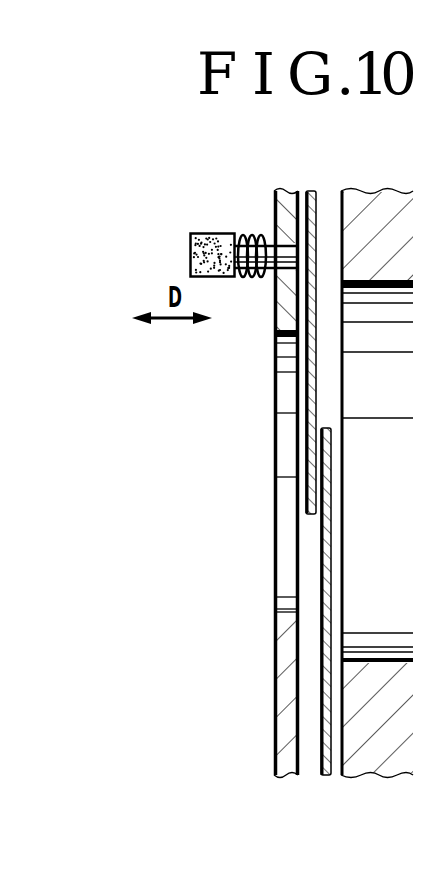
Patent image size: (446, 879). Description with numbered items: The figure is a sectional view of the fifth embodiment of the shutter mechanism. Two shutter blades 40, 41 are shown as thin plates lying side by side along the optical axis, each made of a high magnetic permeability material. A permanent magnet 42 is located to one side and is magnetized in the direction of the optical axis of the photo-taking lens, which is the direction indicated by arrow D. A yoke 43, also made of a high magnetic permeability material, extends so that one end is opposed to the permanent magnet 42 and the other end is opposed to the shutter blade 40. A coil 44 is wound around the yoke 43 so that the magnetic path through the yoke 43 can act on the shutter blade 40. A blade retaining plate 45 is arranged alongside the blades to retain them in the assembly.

The shutter blade 40 is at (315, 210).
The shutter blade 41 is at (321, 773).
The permanent magnet 42 is at (192, 247).
The yoke 43 is at (275, 215).
The coil 44 is at (267, 278).
The blade retaining plate 45 is at (284, 675).